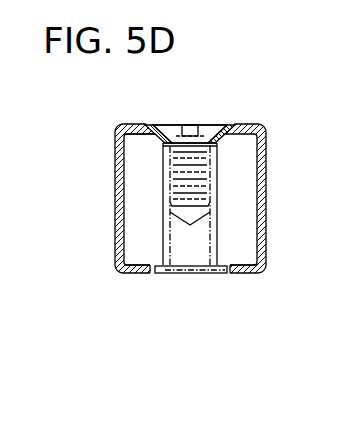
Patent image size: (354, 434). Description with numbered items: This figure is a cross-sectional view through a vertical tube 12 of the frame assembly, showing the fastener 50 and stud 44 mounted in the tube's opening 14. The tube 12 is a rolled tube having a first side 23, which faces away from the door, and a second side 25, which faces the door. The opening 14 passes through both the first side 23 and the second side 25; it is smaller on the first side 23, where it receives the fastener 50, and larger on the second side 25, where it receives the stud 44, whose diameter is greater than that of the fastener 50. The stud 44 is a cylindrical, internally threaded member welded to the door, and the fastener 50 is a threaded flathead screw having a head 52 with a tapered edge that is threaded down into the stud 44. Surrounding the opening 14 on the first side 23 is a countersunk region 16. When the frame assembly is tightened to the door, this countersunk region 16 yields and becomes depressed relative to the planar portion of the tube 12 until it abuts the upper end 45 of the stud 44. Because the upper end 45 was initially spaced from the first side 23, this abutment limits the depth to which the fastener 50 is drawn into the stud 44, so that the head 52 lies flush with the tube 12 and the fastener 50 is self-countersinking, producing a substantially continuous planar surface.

The tube 12 is at (263, 180).
The opening 14 is at (143, 278).
The countersunk region 16 is at (155, 128).
The first side 23 is at (141, 127).
The second side 25 is at (243, 273).
The stud 44 is at (200, 255).
The upper end 45 is at (160, 146).
The fastener 50 is at (215, 122).
The head 52 is at (172, 135).